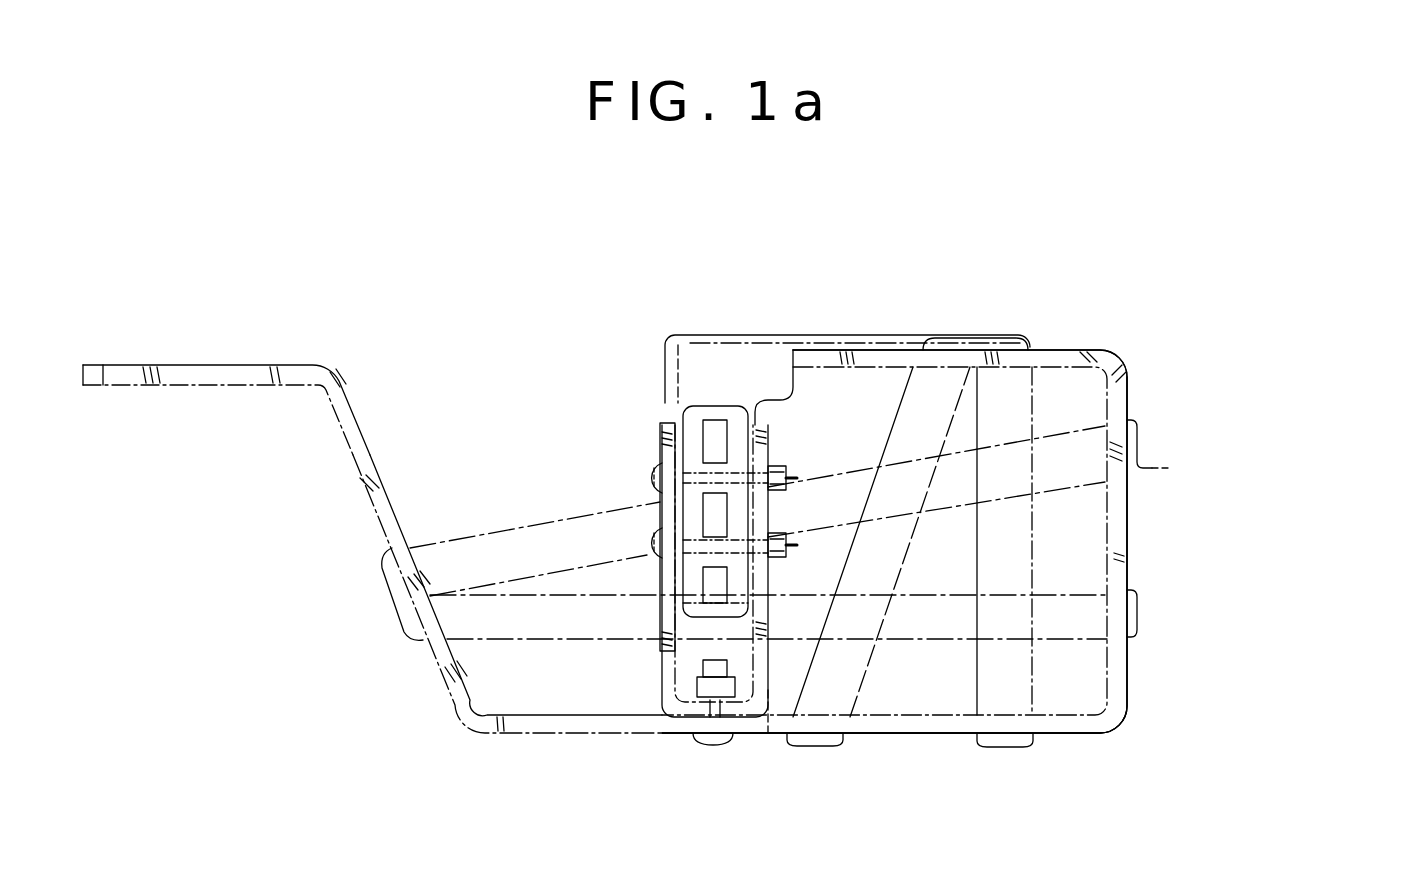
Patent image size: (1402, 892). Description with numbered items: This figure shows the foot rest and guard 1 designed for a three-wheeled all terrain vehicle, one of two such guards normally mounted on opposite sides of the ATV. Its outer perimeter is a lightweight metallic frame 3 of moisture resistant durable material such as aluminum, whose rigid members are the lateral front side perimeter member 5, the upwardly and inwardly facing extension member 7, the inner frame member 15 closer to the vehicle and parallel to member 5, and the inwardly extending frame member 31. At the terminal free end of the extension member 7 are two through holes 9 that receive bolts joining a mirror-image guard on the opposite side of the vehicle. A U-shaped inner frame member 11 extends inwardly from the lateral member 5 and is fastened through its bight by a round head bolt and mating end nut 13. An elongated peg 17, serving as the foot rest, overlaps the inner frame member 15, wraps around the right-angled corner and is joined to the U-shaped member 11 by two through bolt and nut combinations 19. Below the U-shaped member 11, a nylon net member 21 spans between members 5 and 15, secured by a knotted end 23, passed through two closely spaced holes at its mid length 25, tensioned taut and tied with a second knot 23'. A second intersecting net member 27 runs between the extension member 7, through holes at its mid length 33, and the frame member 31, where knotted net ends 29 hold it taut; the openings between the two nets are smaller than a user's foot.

The foot rest and guard 1 is at (1235, 525).
The frame 3 is at (1195, 697).
The lateral front side perimeter member 5 is at (767, 737).
The extension member 7 is at (437, 670).
The through holes 9 is at (108, 387).
The U-shaped inner frame member 11 is at (657, 443).
The round head bolt and mating end nut 13 is at (680, 720).
The inner frame member 15 is at (1080, 347).
The peg 17 is at (838, 333).
The through bolt and nut combinations 19 is at (647, 547).
The net member 21 is at (977, 697).
The knotted end 23 is at (984, 789).
The second outside frame end knot 23' is at (829, 789).
The mid or intermediate length 25 is at (980, 333).
The second net member 27 is at (493, 600).
The knotted net ends 29 is at (1170, 468).
The inwardly extending frame member 31 is at (1103, 570).
The mid length 33 is at (400, 610).